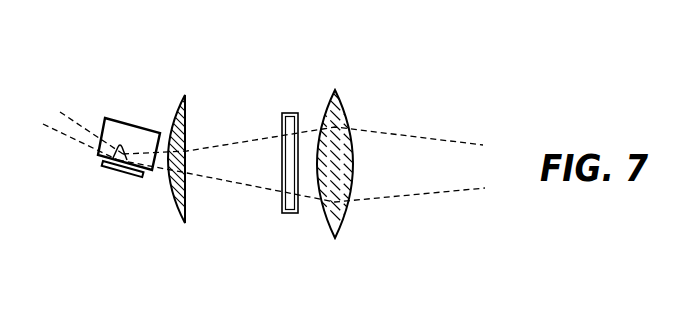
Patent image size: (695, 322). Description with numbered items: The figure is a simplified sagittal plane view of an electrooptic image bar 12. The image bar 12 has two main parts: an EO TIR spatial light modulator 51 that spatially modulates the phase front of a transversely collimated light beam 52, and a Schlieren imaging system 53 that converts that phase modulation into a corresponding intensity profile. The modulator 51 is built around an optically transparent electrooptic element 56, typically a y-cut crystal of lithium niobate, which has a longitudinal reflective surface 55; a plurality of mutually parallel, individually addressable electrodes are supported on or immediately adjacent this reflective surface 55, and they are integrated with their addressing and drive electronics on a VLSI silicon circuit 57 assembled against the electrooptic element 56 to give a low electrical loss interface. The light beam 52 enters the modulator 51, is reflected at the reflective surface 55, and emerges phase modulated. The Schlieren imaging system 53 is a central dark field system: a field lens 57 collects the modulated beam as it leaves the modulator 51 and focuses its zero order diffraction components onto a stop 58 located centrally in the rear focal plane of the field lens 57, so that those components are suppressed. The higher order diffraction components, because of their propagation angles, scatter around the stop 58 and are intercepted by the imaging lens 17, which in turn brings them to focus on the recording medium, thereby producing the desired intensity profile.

The image bar 12 is at (373, 272).
The imaging lens 17 is at (343, 213).
The EO TIR spatial light modulator 51 is at (140, 113).
The light beam 52 is at (62, 118).
The Schlieren imaging system 53 is at (335, 74).
The reflective surface 55 is at (118, 153).
The electrooptic element 56 is at (105, 122).
The field lens 57 is at (105, 165).
The stop 58 is at (292, 213).